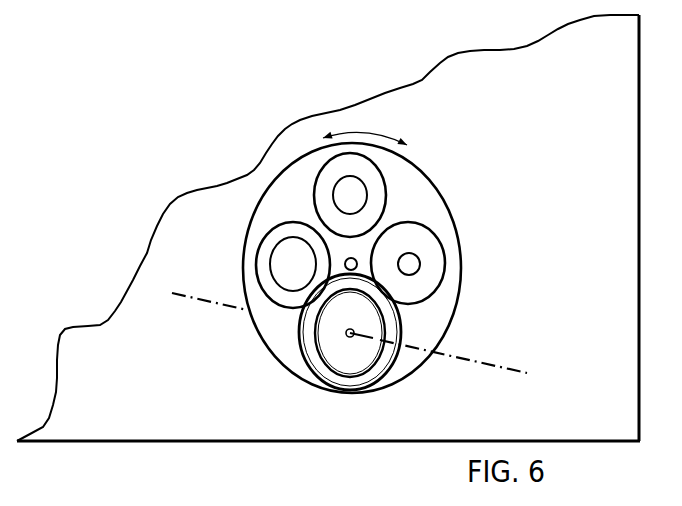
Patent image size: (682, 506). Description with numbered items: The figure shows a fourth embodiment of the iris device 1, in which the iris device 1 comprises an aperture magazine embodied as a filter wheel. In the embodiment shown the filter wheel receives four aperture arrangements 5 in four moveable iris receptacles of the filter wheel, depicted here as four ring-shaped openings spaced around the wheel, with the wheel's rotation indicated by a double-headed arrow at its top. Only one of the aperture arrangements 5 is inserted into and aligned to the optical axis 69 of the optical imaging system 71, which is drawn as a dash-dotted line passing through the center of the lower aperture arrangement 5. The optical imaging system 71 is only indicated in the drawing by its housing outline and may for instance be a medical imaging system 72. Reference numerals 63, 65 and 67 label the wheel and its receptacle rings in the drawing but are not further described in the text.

The iris device 1 is at (199, 163).
The aperture arrangement 5 is at (383, 192).
The rotary carrier 63 is at (381, 262).
The rotary disc 65 is at (454, 212).
The receptacle 67 is at (307, 180).
The optical axis 69 is at (497, 365).
The optical imaging system 71 is at (328, 228).
The medical imaging system 72 is at (551, 441).